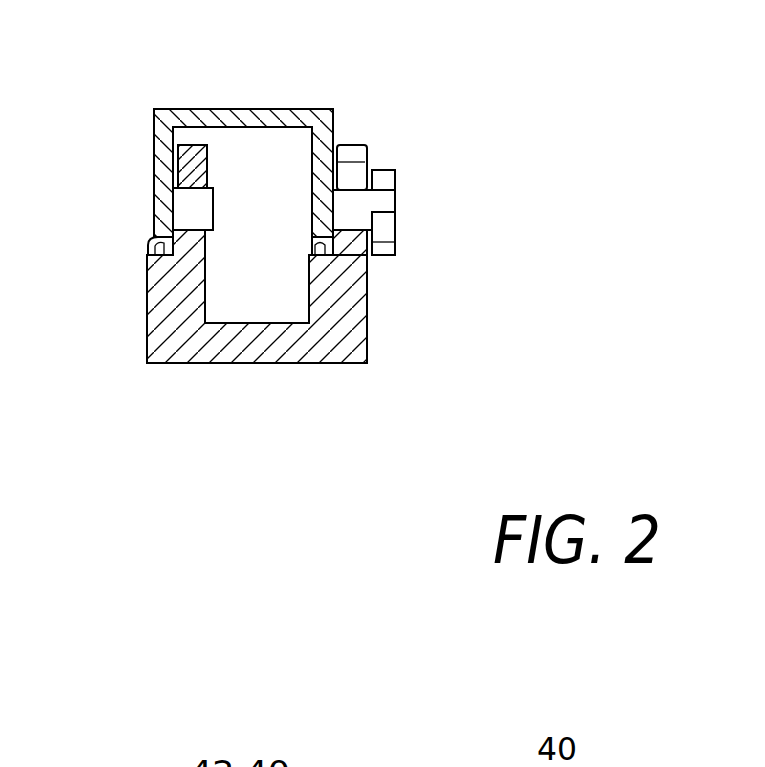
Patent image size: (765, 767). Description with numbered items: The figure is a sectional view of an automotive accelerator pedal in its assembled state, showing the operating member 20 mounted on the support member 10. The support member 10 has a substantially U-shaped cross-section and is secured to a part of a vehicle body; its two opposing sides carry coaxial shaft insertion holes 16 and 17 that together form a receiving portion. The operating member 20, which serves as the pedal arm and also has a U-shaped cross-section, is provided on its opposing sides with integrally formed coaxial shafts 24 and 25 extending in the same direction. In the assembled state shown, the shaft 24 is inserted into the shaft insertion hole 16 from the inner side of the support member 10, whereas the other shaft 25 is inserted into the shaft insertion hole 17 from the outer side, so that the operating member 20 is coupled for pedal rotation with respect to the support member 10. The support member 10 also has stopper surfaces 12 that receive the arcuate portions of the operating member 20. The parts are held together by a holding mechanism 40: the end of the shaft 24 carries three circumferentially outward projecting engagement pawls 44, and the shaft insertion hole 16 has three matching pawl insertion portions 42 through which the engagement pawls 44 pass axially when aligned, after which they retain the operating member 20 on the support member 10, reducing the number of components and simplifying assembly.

The support member 10 is at (355, 338).
The stopper surfaces 12 is at (156, 252).
The shaft insertion hole 16 is at (364, 270).
The shaft insertion hole 17 is at (190, 170).
The operating member 20 is at (233, 117).
The shaft 24 is at (385, 203).
The shaft 25 is at (192, 204).
The holding mechanism 40 is at (406, 166).
The pawl insertion portions 42 is at (353, 146).
The engagement pawls 44 is at (385, 178).